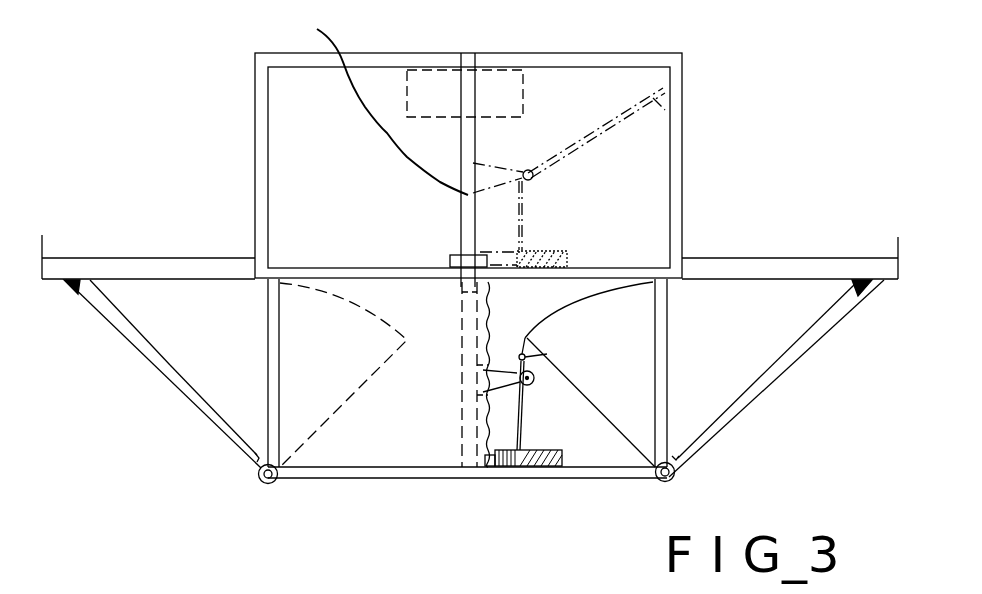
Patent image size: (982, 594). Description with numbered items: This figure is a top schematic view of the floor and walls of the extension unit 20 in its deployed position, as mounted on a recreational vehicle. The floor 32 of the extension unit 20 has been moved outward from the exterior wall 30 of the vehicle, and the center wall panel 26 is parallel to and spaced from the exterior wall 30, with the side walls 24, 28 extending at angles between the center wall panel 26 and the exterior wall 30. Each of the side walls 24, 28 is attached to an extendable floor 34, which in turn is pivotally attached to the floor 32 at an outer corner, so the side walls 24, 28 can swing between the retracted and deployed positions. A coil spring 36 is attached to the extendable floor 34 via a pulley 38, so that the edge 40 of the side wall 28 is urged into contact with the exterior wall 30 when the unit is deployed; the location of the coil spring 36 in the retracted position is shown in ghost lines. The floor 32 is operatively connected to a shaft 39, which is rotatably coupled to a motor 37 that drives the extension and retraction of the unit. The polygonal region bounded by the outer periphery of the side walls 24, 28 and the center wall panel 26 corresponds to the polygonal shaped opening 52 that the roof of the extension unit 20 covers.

The extension unit 20 is at (474, 405).
The side wall 24 is at (167, 372).
The center wall panel 26 is at (478, 480).
The side wall 28 is at (760, 385).
The exterior wall 30 is at (128, 268).
The floor 32 is at (400, 440).
The extendable floor 34 is at (178, 323).
The coil spring 36 is at (543, 467).
The motor 37 is at (407, 95).
The pulley 38 is at (533, 382).
The shaft 39 is at (374, 103).
The edge 40 is at (860, 293).
The polygonal shaped opening 52 is at (312, 453).